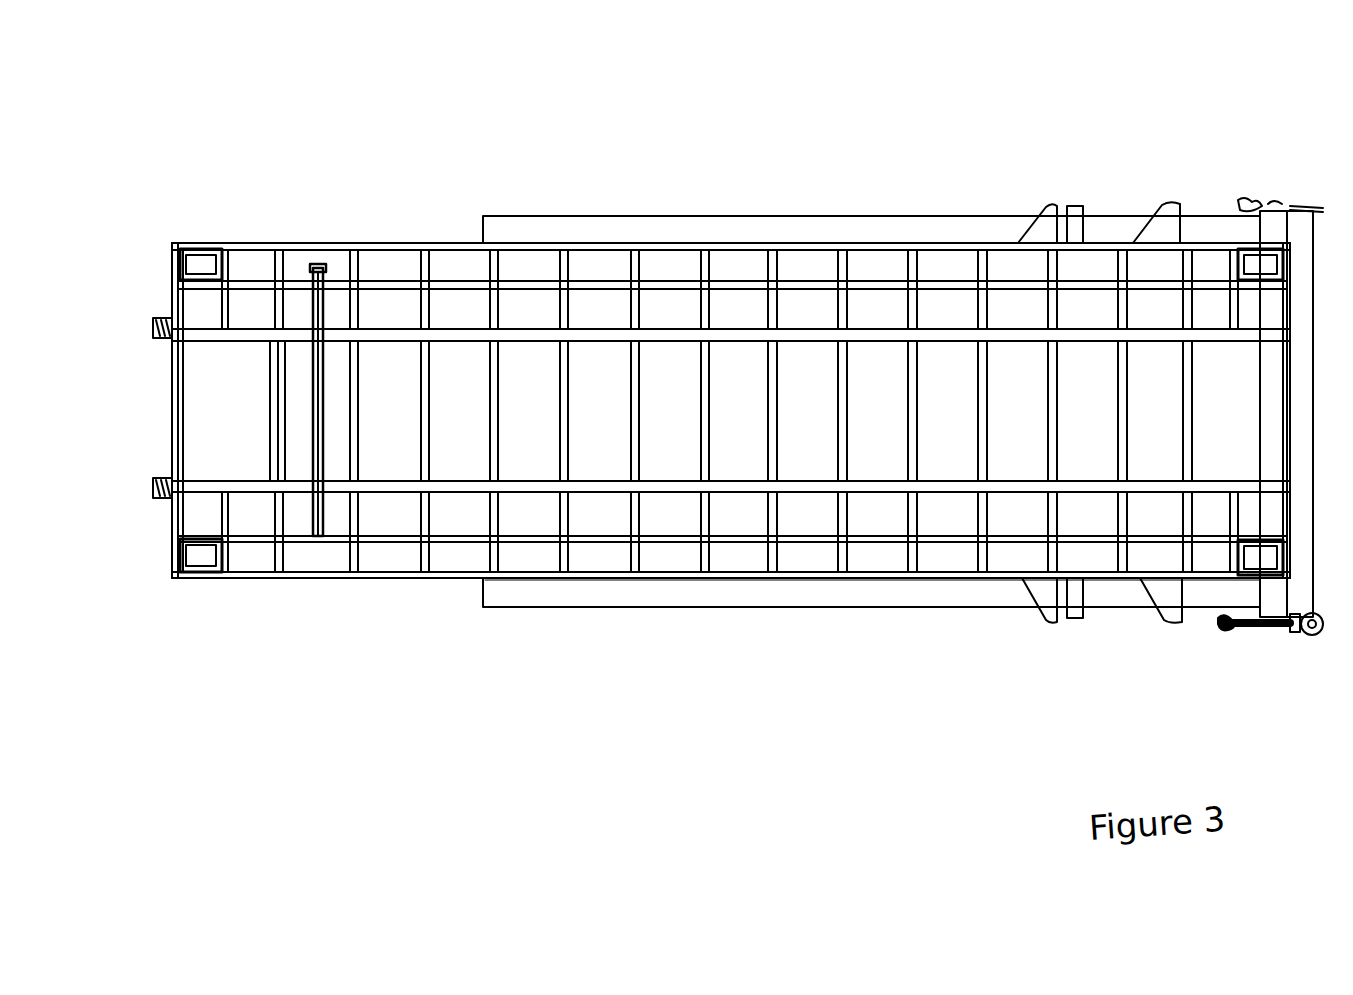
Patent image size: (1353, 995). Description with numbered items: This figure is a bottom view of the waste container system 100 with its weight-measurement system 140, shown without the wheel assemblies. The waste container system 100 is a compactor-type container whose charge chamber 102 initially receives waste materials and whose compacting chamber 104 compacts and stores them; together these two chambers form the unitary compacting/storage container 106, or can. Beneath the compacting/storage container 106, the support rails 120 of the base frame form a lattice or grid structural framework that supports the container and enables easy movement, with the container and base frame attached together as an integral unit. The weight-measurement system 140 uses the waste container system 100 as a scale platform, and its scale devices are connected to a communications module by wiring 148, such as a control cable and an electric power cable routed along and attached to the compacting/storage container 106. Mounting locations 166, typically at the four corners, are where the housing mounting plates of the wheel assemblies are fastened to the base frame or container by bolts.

The waste container system 100 is at (744, 125).
The charge chamber 102 is at (337, 596).
The compacting chamber 104 is at (832, 624).
The compacting/storage container 106 is at (657, 674).
The support rails 120 is at (442, 256).
The weight-measurement system 140 is at (215, 205).
The wiring 148 is at (344, 262).
The mounting locations 166 is at (1254, 604).